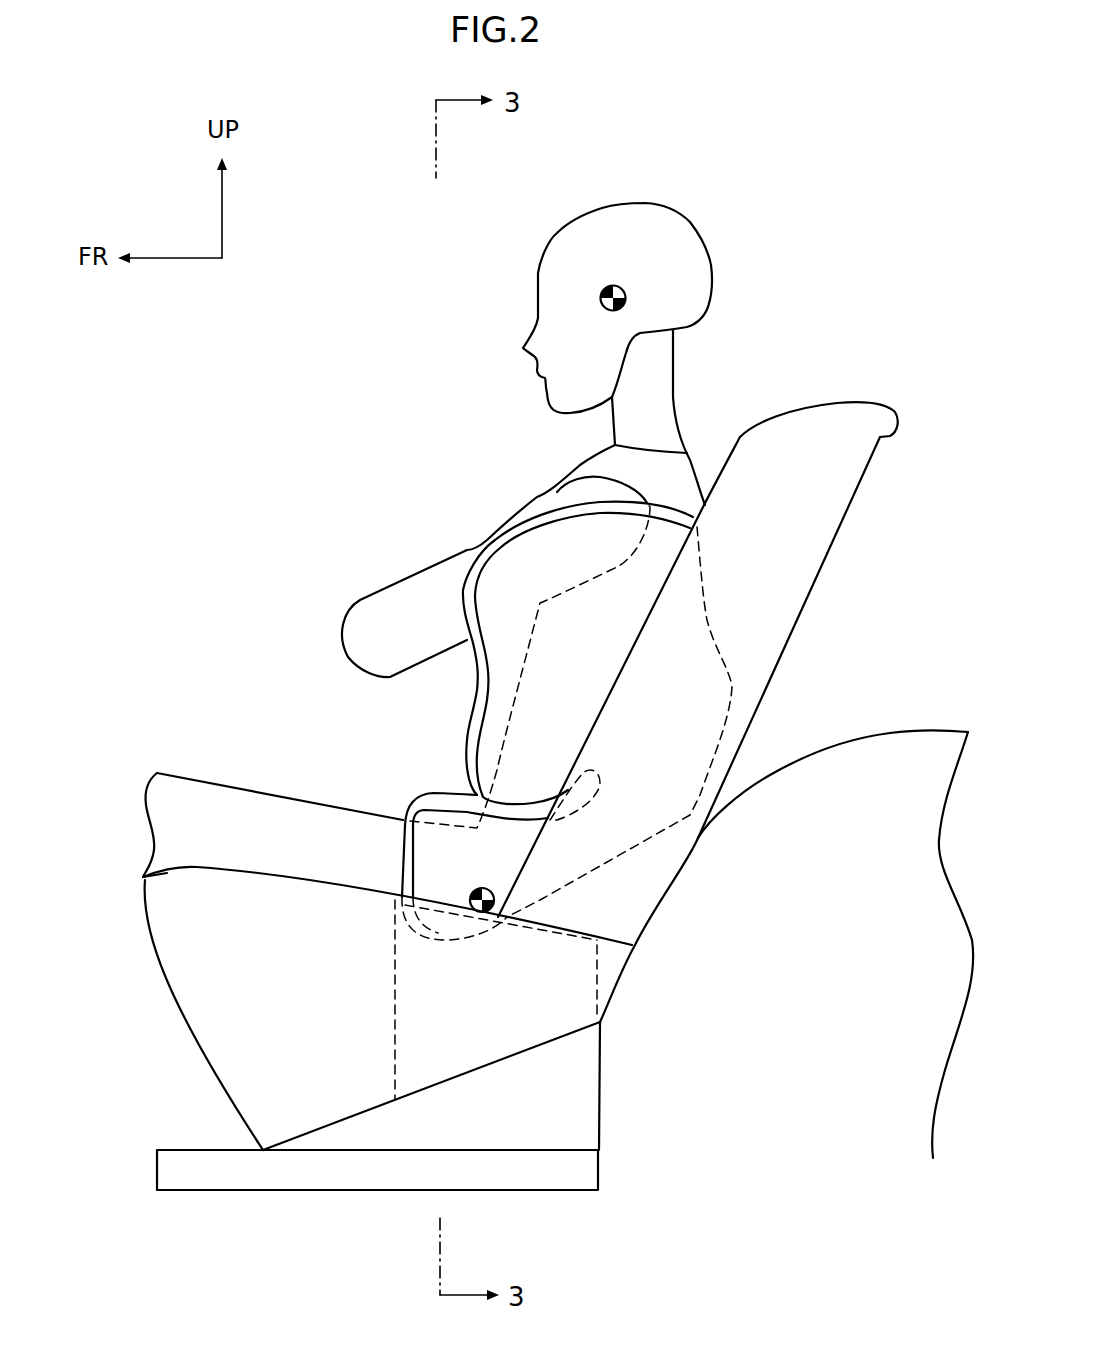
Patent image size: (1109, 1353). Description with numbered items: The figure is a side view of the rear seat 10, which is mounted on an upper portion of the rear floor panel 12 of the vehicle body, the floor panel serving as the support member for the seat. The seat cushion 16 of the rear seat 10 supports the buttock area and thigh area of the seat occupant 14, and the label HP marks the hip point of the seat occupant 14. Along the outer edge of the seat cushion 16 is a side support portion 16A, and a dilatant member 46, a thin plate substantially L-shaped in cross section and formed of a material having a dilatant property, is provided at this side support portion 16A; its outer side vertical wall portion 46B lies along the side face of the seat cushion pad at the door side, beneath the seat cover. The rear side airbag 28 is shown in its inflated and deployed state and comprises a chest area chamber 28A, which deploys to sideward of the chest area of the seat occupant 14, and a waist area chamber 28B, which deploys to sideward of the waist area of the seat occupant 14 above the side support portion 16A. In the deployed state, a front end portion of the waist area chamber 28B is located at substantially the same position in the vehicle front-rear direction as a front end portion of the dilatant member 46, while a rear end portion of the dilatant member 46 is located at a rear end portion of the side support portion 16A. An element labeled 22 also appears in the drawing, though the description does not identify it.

The rear seat 10 is at (530, 712).
The rear floor panel 12 is at (347, 1117).
The seat occupant 14 is at (602, 206).
The seat cushion 16 is at (360, 928).
The side support portion 16A is at (225, 867).
The seat back (seat back frame 18) 22 is at (817, 577).
The rear side airbag 28 is at (505, 712).
The chest area chamber 28A is at (487, 573).
The waist area chamber 28B is at (420, 843).
The dilatant member 46 is at (386, 970).
The outer side vertical wall portion 46B is at (500, 1037).
The hip point HP is at (486, 896).